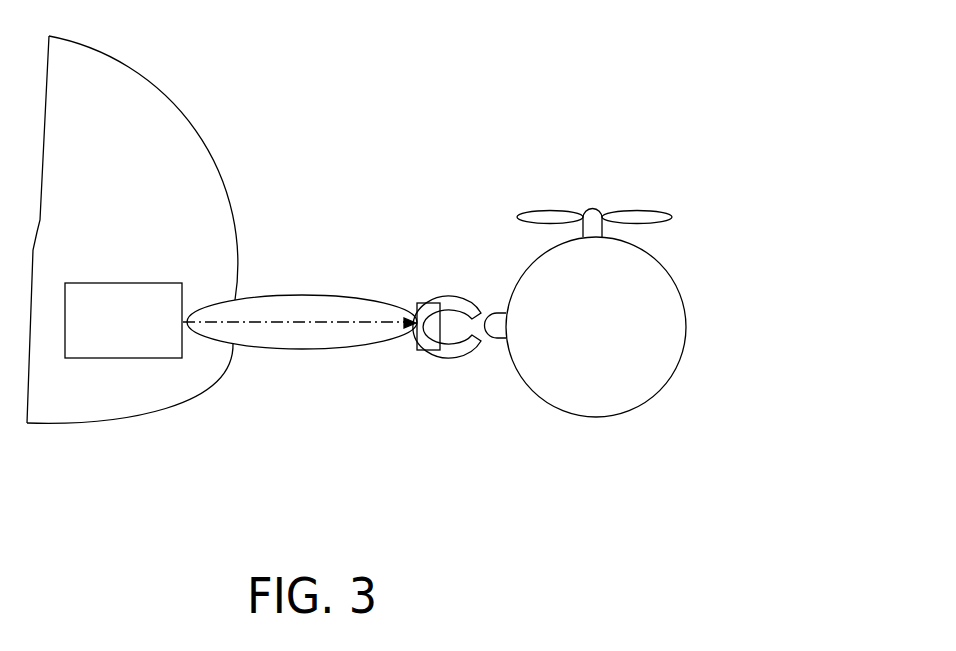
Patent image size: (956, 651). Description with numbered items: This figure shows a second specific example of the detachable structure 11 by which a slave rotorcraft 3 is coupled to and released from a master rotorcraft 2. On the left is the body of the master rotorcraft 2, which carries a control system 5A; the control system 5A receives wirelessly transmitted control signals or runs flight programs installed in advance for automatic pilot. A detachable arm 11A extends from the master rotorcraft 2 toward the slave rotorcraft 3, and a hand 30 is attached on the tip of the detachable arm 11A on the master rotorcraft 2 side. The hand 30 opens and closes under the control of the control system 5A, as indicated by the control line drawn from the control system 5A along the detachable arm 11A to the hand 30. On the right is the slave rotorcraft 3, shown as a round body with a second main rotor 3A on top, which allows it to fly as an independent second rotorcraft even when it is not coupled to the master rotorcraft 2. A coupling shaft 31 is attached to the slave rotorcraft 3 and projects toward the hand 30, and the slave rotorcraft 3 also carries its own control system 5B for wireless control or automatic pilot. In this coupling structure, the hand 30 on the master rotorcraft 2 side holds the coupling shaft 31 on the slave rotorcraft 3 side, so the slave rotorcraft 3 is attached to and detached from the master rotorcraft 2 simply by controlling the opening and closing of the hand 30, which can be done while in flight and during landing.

The master rotorcraft 2 is at (186, 112).
The control system 5A is at (162, 362).
The detachable structure 11 is at (492, 192).
The detachable arm 11A is at (328, 315).
The hand 30 is at (452, 295).
The coupling shaft 31 is at (500, 310).
The slave rotorcraft 3 is at (593, 425).
The control system 5B is at (650, 365).
The second main rotor 3A is at (635, 210).